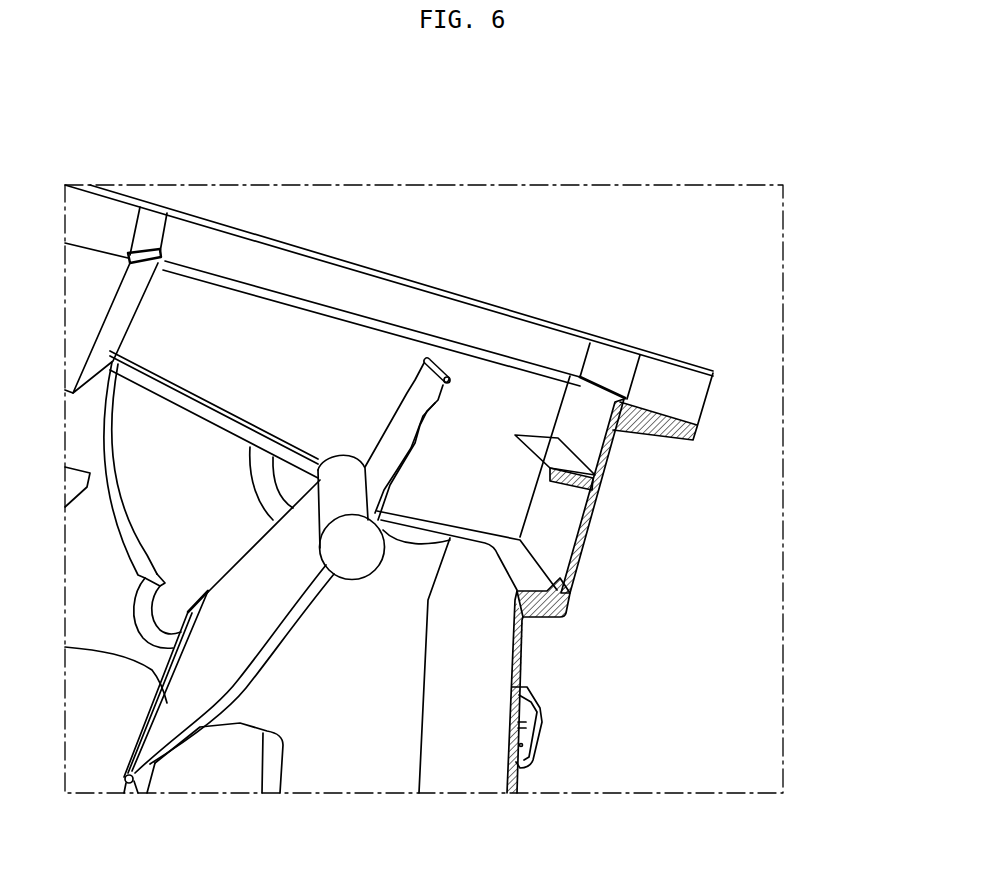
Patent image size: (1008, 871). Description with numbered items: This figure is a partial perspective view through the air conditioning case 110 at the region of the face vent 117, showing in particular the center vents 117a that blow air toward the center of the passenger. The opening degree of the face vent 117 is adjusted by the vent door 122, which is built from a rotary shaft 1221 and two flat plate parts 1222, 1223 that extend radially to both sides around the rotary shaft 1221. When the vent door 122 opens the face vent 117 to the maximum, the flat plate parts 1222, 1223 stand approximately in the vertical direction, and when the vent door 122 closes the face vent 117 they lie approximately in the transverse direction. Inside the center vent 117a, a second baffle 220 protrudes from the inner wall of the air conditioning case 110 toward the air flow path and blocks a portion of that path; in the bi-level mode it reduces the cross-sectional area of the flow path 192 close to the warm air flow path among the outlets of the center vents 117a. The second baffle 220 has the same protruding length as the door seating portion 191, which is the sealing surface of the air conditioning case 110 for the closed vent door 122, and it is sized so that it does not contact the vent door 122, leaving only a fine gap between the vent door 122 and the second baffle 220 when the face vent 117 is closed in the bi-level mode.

The face vent 117 is at (389, 280).
The center vents 117a is at (300, 350).
The flow path 192 is at (446, 508).
The door seating portion 191 is at (573, 573).
The air conditioning case 110 is at (577, 530).
The second baffle 220 is at (590, 453).
The flat plate part 1222 is at (402, 423).
The rotary shaft 1221 is at (358, 555).
The flat plate part 1223 is at (265, 640).
The vent door 122 is at (237, 698).